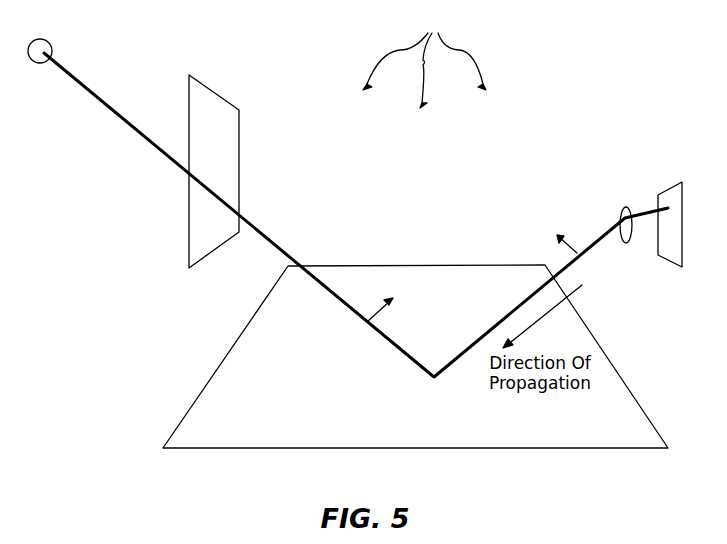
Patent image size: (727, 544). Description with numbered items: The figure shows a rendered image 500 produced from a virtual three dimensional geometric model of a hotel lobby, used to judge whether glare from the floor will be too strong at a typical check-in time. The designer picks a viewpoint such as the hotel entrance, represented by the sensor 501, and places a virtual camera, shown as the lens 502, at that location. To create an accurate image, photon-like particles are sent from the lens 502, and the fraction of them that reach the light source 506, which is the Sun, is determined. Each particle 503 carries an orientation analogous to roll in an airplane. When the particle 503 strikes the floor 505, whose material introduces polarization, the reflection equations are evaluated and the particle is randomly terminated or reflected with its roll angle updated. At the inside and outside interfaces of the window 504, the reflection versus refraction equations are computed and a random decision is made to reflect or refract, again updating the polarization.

The rendered image 500 is at (424, 60).
The sensor 501 is at (665, 197).
The lens 502 is at (623, 217).
The particle 503 is at (268, 232).
The window 504 is at (230, 135).
The floor 505 is at (415, 356).
The light source 506 is at (35, 62).